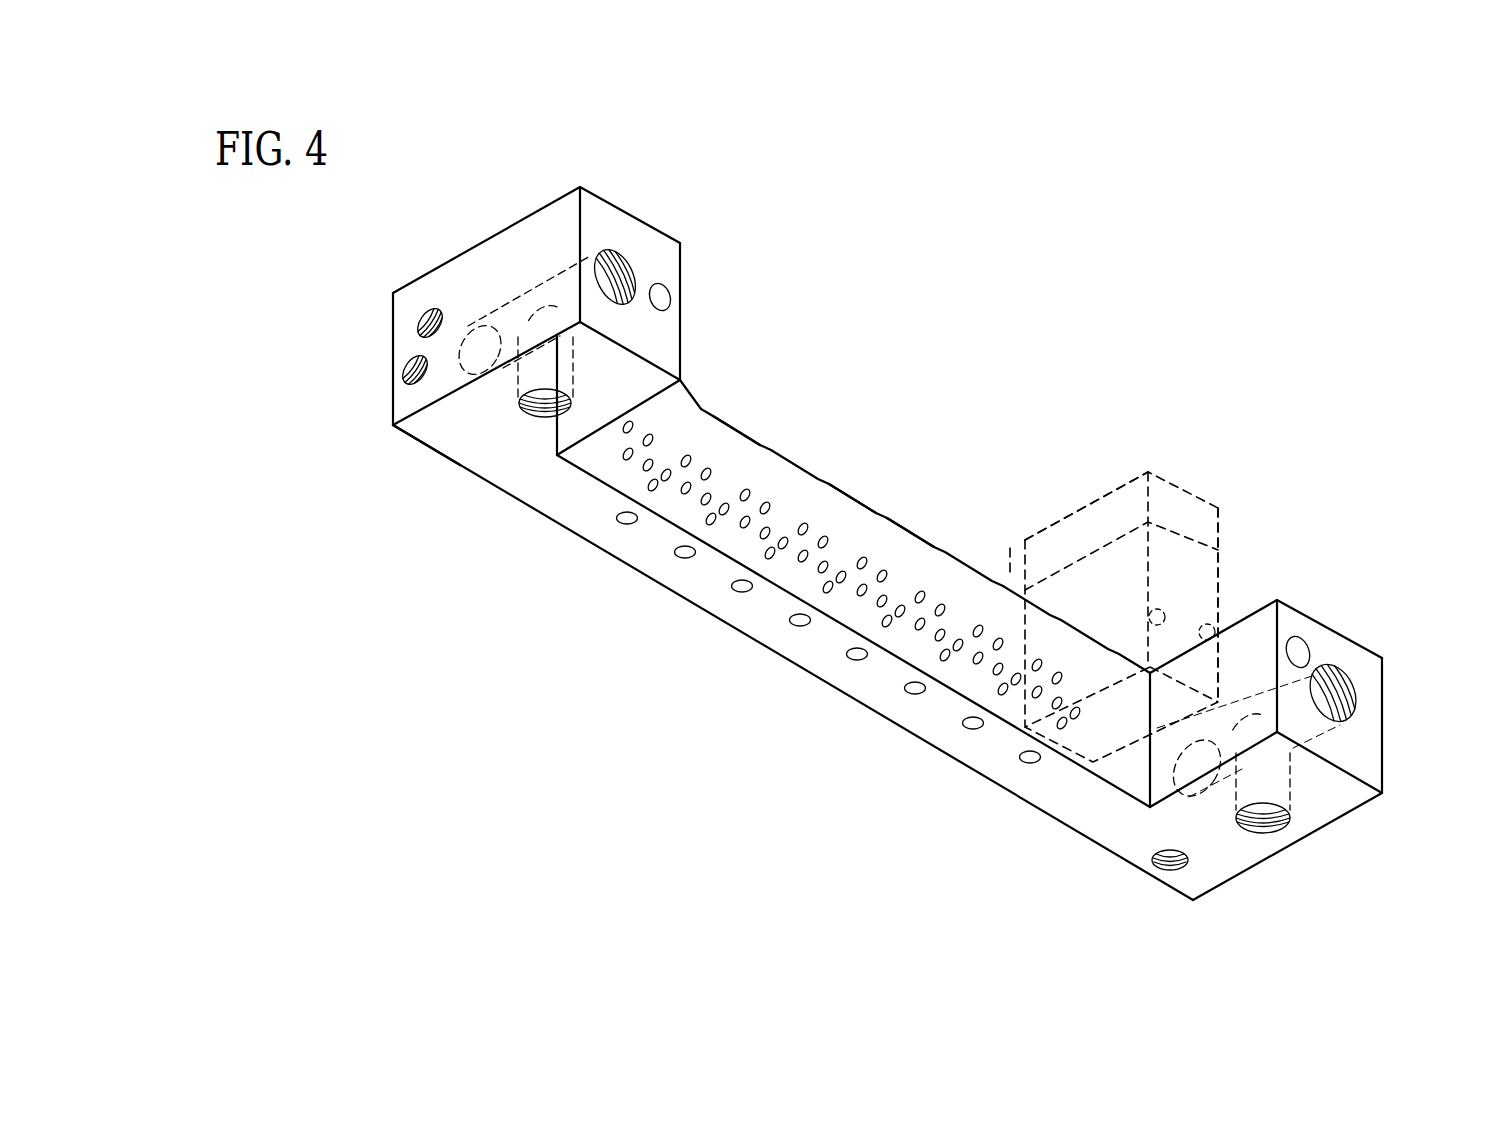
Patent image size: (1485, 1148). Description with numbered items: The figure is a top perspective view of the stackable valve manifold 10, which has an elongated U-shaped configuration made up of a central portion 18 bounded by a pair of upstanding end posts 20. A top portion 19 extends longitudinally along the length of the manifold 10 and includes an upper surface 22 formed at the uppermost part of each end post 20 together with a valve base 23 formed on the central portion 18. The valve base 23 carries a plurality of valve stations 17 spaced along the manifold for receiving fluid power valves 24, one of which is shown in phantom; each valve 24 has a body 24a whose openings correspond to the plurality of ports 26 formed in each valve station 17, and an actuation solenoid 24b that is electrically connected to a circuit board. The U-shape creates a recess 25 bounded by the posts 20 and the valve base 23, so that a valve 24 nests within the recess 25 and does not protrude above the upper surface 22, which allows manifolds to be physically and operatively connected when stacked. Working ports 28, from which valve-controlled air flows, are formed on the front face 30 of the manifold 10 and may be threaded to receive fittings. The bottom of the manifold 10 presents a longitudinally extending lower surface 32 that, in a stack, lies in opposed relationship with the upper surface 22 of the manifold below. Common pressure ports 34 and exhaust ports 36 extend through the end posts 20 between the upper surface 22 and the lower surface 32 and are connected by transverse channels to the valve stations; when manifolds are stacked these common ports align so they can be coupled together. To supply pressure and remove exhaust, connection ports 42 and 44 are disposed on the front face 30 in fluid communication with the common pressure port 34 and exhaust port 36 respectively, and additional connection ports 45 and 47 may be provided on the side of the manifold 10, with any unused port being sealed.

The manifold 10 is at (1015, 318).
The valve station 17 is at (833, 594).
The central portion 18 is at (858, 522).
The top portion 19 is at (556, 200).
The end post 20 is at (468, 280).
The upper surface 22 is at (672, 260).
The valve base 23 is at (735, 443).
The valve 24 is at (1200, 490).
The valve body 24a is at (1200, 582).
The actuation solenoid 24b is at (1078, 532).
The recess 25 is at (933, 586).
The port 26 is at (968, 650).
The working port 28 is at (738, 588).
The front face 30 is at (638, 547).
The lower surface 32 is at (426, 445).
The common pressure port 34 is at (620, 262).
The exhaust port 36 is at (1345, 695).
The connection port 42 is at (543, 412).
The connection port 44 is at (1165, 861).
The connection port 45 is at (420, 322).
The connection port 47 is at (408, 371).